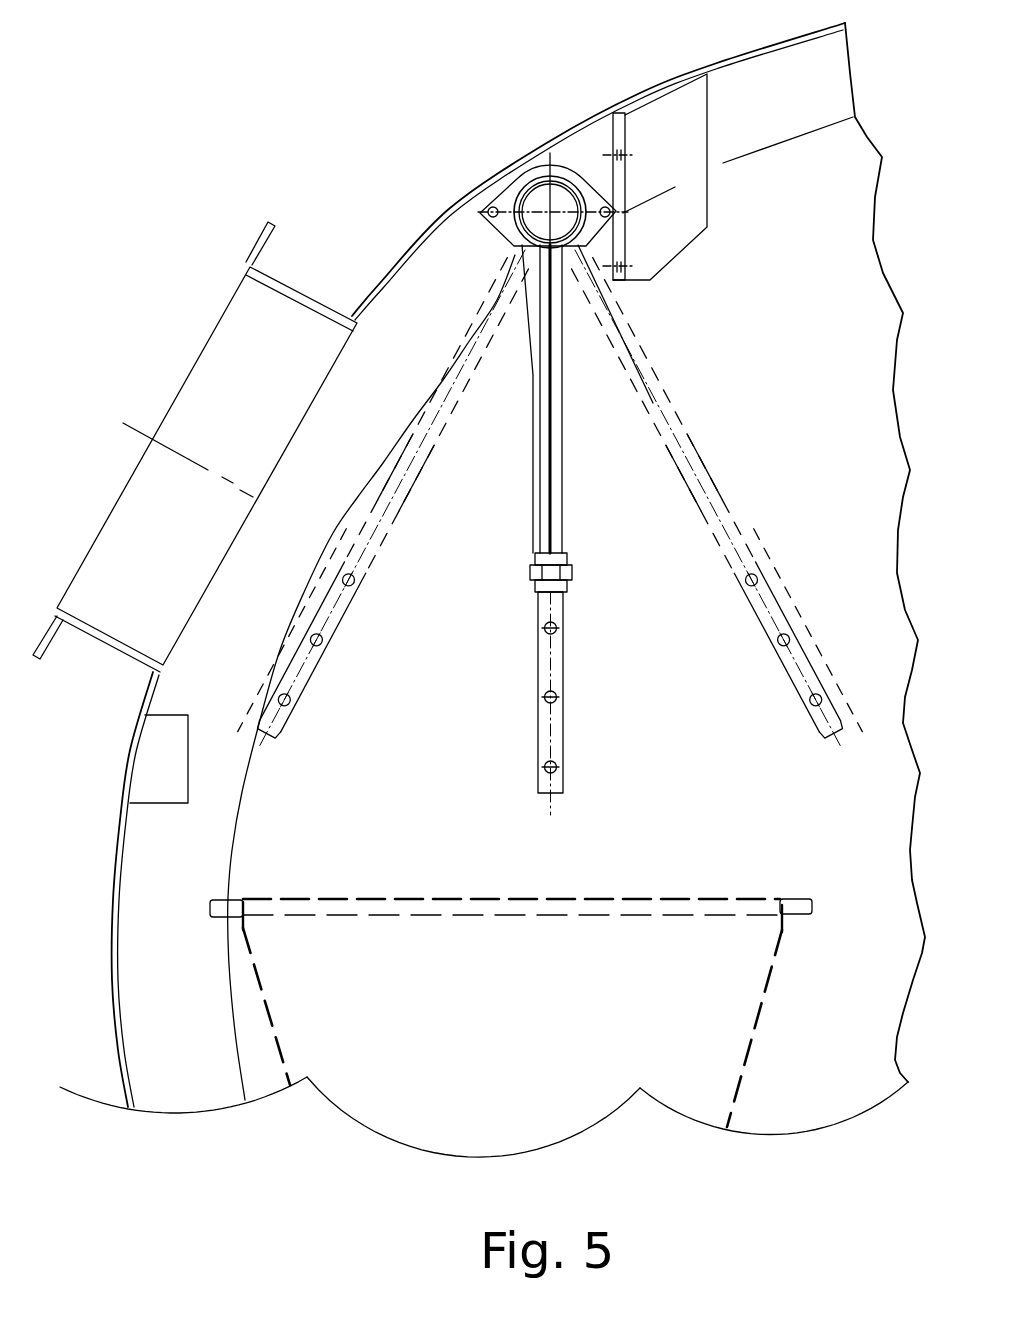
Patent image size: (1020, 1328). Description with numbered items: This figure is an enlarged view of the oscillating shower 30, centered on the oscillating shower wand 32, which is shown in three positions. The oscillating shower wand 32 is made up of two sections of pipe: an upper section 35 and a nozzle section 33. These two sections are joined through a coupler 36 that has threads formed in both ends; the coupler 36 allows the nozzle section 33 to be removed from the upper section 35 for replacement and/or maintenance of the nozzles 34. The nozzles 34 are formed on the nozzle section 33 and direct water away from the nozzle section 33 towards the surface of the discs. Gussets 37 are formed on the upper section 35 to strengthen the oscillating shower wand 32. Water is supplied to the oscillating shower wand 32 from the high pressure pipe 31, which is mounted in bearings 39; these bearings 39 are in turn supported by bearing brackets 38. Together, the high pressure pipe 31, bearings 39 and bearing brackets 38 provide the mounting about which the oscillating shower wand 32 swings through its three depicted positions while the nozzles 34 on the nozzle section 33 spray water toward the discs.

The oscillating shower 30 is at (561, 101).
The high pressure pipe 31 is at (532, 185).
The oscillating shower wand 32 is at (526, 444).
The nozzle section 33 is at (563, 738).
The nozzles 34 is at (555, 695).
The upper section 35 is at (531, 370).
The coupler 36 is at (572, 563).
The gussets 37 is at (552, 397).
The bearing brackets 38 is at (628, 137).
The bearings 39 is at (505, 197).